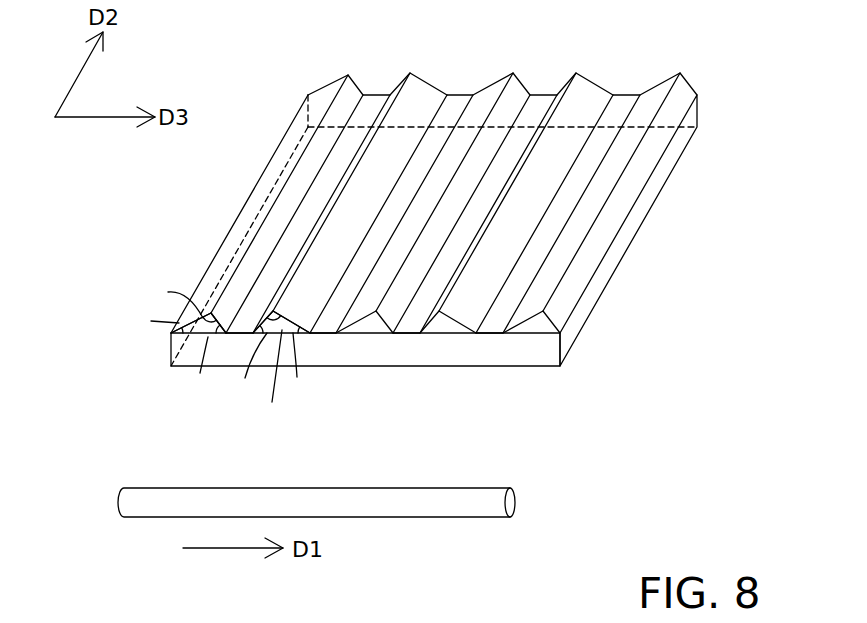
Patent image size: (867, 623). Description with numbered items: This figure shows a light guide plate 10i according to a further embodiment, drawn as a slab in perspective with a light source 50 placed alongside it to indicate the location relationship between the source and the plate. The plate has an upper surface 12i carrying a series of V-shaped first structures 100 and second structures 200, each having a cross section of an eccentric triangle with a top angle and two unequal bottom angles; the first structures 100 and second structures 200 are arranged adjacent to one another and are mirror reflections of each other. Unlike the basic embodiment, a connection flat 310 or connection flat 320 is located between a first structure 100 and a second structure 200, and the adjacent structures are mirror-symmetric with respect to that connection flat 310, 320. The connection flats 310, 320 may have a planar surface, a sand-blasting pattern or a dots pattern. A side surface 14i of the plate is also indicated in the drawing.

The light guide plate 10i is at (462, 219).
The upper surface 12i is at (439, 184).
The side surface 14i is at (604, 302).
The connection flat 310 is at (375, 98).
The connection flat 320 is at (463, 98).
The first structure 100 is at (187, 333).
The second structure 200 is at (282, 330).
The light source 50 is at (516, 503).